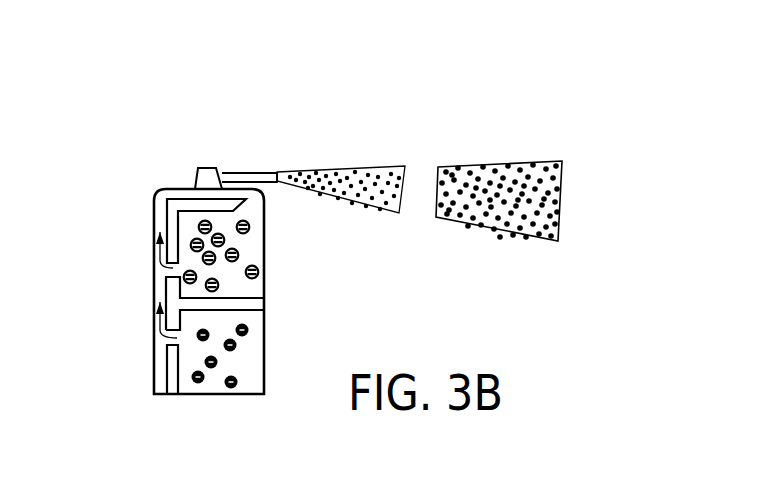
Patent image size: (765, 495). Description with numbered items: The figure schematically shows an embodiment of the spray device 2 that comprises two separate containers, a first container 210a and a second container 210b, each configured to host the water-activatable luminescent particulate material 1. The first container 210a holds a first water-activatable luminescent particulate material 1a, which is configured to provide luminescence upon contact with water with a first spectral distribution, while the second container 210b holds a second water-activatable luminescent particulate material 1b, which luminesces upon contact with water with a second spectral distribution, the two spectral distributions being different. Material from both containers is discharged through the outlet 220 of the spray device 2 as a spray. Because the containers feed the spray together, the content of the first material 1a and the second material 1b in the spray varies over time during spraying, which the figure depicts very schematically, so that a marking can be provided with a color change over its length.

The spray device 2 is at (125, 198).
The nozzle / spray outlet tube 220 is at (271, 158).
The water-activatable luminescent particulate material 1 is at (373, 152).
The first water-activatable luminescent particulate material 1a is at (250, 226).
The second water-activatable luminescent particulate material 1b is at (536, 248).
The first container 210a is at (275, 268).
The second container 210b is at (276, 348).